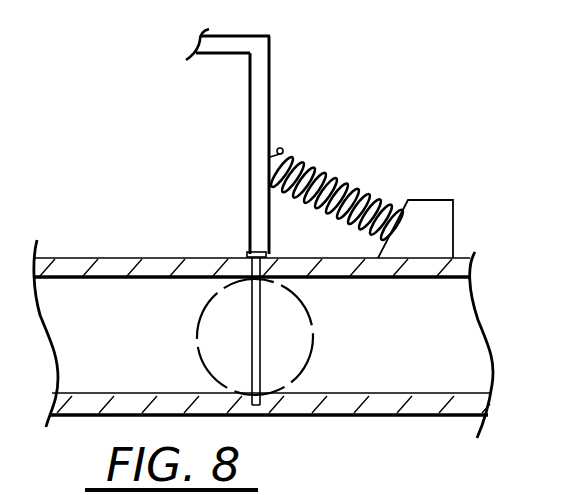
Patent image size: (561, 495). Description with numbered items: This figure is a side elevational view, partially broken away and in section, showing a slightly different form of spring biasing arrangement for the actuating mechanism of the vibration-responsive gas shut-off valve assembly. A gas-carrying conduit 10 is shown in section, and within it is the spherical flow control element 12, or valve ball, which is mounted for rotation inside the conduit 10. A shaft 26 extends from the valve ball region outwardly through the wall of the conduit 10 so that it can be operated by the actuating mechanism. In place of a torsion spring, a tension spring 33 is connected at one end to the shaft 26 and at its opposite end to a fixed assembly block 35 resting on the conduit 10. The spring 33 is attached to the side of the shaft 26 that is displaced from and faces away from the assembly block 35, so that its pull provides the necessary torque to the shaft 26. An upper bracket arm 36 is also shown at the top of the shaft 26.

The conduit 10 is at (413, 416).
The spherical flow control element 12 is at (311, 328).
The shaft 26 is at (268, 101).
The tension spring 33 is at (348, 182).
The fixed assembly block 35 is at (434, 200).
The bracket arm 36 is at (232, 36).